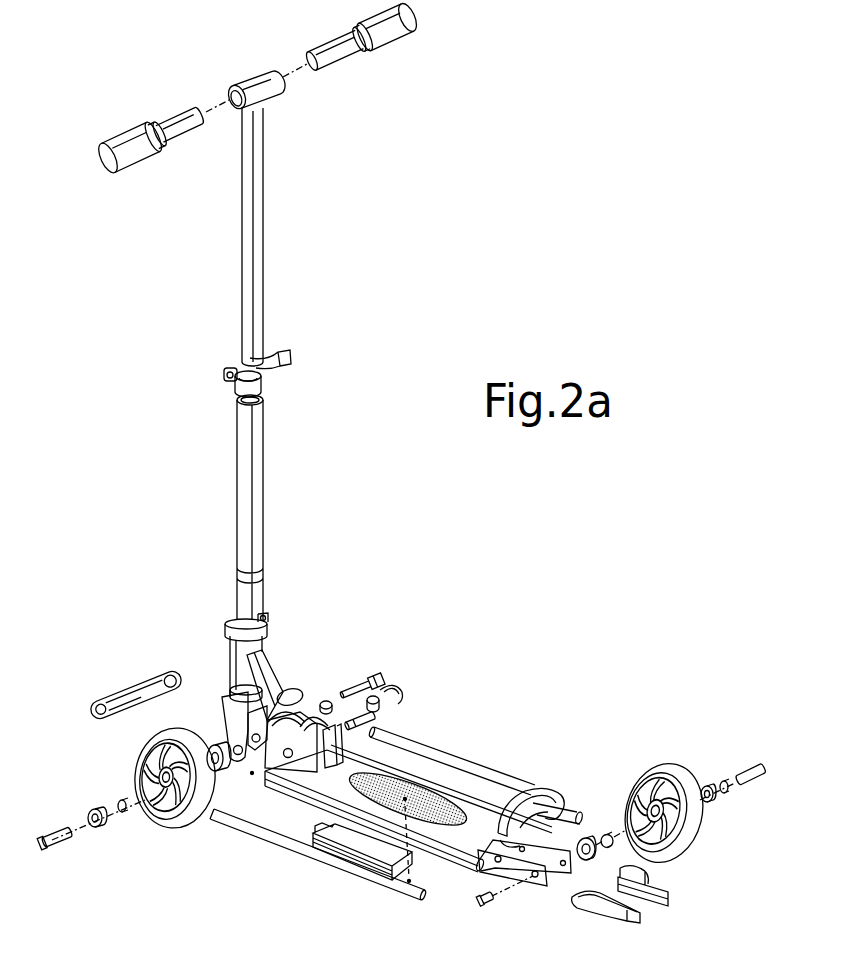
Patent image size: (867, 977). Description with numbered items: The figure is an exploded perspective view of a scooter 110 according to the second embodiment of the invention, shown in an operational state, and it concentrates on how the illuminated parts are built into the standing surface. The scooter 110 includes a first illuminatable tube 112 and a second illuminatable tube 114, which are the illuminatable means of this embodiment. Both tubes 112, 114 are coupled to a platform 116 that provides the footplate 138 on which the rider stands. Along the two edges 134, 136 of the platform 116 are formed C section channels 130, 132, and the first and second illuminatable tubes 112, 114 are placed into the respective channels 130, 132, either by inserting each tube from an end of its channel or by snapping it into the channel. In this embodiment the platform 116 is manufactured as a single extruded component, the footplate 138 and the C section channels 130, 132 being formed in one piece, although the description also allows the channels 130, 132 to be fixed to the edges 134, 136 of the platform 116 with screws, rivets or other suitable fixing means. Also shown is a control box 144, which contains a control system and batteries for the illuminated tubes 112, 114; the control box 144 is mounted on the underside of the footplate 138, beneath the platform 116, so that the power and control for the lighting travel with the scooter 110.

The scooter 110 is at (463, 627).
The first illuminatable tube 112 is at (263, 840).
The second illuminatable tube 114 is at (477, 780).
The platform 116 is at (540, 880).
The C section channel 130 is at (447, 853).
The C section channel 132 is at (558, 796).
The edge 134 is at (525, 878).
The edge 136 is at (576, 815).
The footplate 138 is at (406, 792).
The control box 144 is at (350, 848).